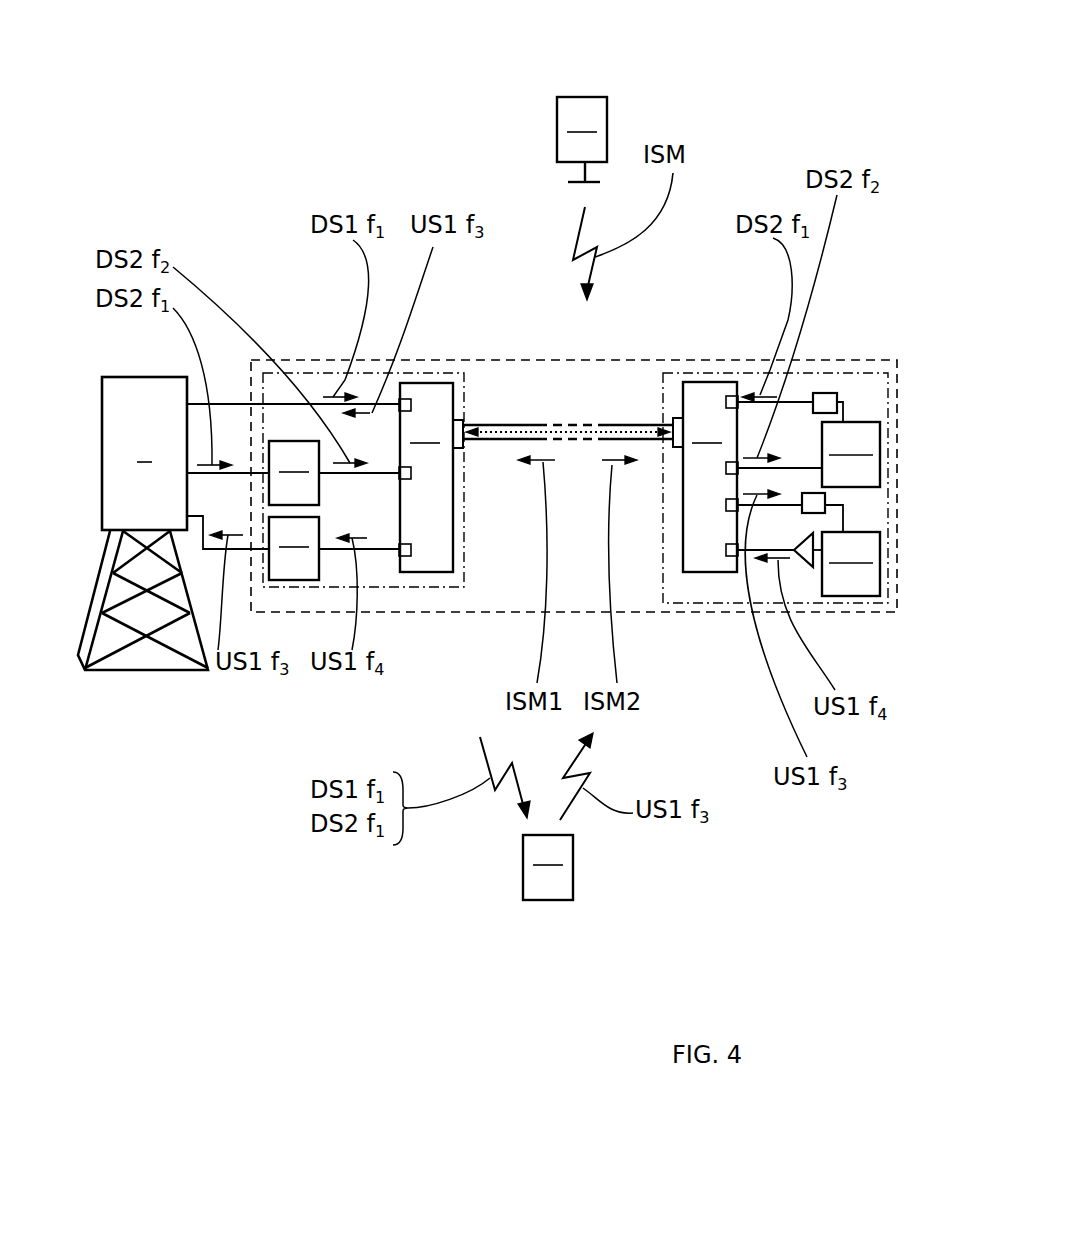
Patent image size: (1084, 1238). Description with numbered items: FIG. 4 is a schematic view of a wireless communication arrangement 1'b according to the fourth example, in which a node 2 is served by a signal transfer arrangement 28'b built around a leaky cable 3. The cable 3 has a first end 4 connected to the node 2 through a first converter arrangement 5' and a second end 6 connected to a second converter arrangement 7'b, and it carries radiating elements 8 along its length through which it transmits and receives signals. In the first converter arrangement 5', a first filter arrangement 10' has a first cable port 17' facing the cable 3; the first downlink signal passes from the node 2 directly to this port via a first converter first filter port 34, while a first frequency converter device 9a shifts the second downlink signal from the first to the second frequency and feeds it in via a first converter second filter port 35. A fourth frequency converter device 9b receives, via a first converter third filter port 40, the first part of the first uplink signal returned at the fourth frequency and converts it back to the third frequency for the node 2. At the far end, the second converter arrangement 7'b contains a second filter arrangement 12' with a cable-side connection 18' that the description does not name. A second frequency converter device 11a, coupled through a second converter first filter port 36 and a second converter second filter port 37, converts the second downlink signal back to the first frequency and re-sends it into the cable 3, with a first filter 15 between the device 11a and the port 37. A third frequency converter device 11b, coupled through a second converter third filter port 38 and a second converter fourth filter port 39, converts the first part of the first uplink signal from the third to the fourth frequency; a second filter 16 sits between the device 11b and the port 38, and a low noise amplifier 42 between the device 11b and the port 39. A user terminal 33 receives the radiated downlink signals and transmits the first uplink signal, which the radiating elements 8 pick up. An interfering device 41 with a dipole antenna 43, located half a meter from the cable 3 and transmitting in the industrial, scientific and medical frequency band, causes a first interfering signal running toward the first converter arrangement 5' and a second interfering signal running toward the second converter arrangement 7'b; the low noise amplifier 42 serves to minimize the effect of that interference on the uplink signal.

The wireless communication arrangement 1'b is at (681, 38).
The node 2 is at (143, 523).
The cable 3 is at (568, 499).
The first end 4 is at (487, 425).
The first converter arrangement 5' is at (334, 402).
The second end 6 is at (647, 425).
The second converter arrangement 7'b is at (749, 451).
The radiating elements 8 is at (493, 432).
The first frequency converter device 9a is at (294, 473).
The fourth frequency converter device 9b is at (294, 548).
The first filter arrangement 10' is at (426, 477).
The second frequency converter device 11a is at (851, 454).
The third frequency converter device 11b is at (851, 564).
The second filter arrangement 12' is at (710, 477).
The first filter 15 is at (818, 405).
The second filter 16 is at (813, 507).
The first cable port 17' is at (458, 546).
The second connector 18' is at (668, 545).
The signal transfer arrangement 28'b is at (586, 572).
The user terminal 33 is at (548, 867).
The first converter first filter port 34 is at (412, 405).
The first converter second filter port 35 is at (408, 480).
The second converter first filter port 36 is at (728, 470).
The second converter second filter port 37 is at (732, 400).
The second converter third filter port 38 is at (728, 505).
The second converter fourth filter port 39 is at (730, 555).
The first converter third filter port 40 is at (404, 558).
The interfering device 41 is at (582, 129).
The low noise amplifier 42 is at (803, 566).
The dipole antenna 43 is at (578, 173).